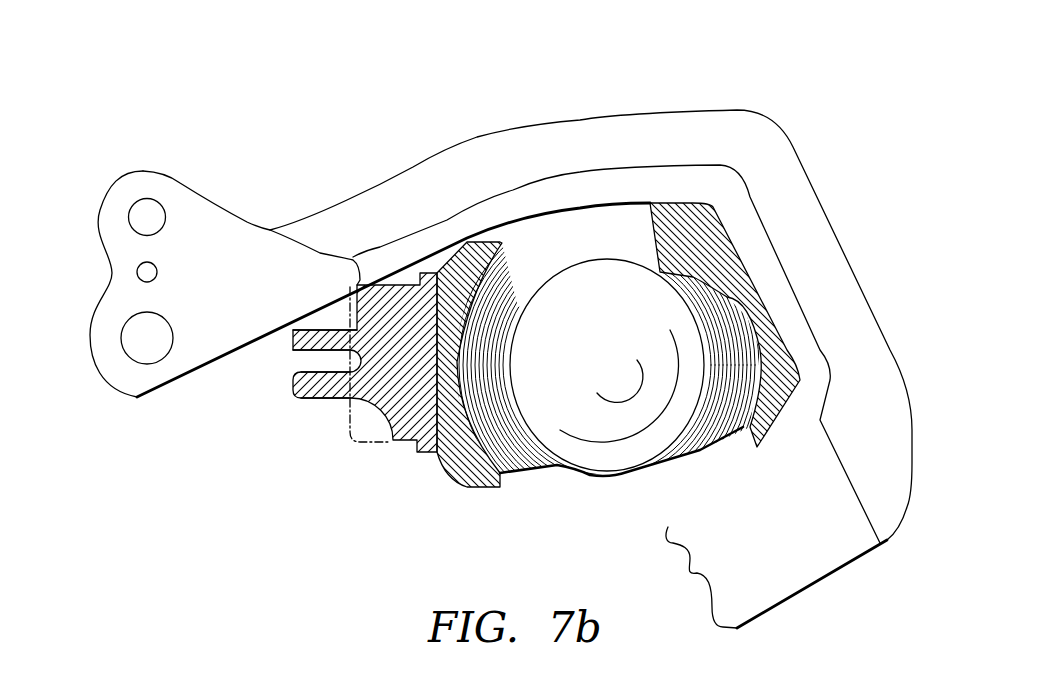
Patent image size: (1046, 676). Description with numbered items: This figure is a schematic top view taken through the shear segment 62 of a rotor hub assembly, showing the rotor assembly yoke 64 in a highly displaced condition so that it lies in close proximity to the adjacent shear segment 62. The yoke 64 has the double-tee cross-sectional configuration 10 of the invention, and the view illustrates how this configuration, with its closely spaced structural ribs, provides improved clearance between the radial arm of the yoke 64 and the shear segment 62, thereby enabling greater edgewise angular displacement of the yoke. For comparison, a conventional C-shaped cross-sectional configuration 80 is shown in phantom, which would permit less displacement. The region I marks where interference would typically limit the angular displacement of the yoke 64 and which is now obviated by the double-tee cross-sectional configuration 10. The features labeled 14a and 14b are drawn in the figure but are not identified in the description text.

The double-tee cross-sectional configuration 10 is at (300, 414).
The first sealing lip 14a is at (296, 332).
The second sealing lip 14b is at (300, 400).
The shear segment 62 is at (402, 290).
The rotor assembly yoke 64 is at (812, 245).
The C-shaped cross-sectional configuration 80 is at (363, 452).
The region of interference I is at (360, 283).